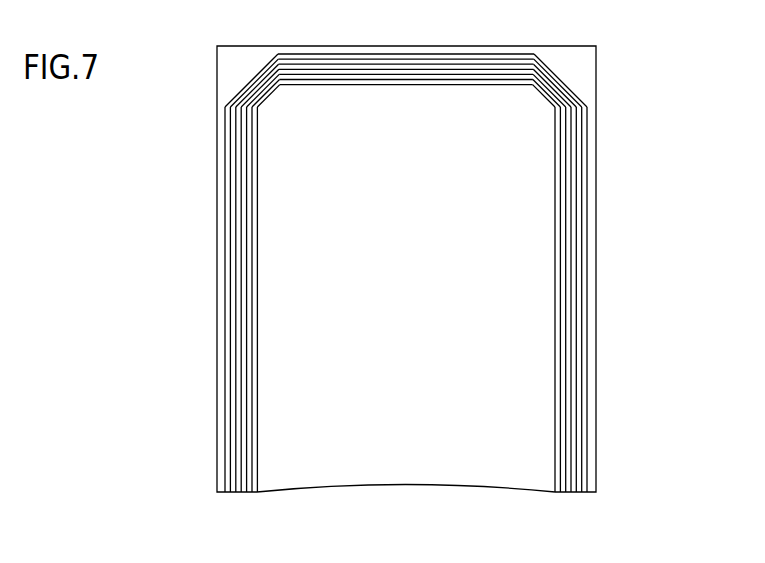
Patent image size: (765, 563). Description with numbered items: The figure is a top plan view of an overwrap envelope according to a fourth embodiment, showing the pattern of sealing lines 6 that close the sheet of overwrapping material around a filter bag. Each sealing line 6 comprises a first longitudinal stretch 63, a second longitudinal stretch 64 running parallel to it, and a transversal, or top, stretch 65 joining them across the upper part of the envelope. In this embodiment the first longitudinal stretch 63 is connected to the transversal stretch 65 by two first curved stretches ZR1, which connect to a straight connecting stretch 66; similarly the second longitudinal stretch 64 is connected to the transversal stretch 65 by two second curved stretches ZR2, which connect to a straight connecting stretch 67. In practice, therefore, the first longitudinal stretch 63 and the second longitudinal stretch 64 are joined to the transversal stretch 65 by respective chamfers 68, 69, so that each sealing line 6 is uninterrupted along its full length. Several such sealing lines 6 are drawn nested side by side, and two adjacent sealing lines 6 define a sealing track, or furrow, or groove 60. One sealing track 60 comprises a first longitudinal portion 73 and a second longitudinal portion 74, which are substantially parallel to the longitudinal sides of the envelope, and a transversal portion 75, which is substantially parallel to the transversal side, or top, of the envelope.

The sealing line 6 is at (241, 420).
The sealing track 60 is at (583, 500).
The first longitudinal stretch 63 is at (230, 366).
The second longitudinal stretch 64 is at (588, 333).
The transversal stretch 65 is at (437, 53).
The straight connecting stretch 66 is at (250, 79).
The straight connecting stretch 67 is at (582, 91).
The chamfer 68 is at (256, 62).
The chamfer 69 is at (577, 69).
The first longitudinal portion 73 is at (226, 284).
The second longitudinal portion 74 is at (579, 288).
The transversal portion 75 is at (392, 65).
The first curved stretch ZR1 is at (224, 105).
The second curved stretch ZR2 is at (537, 47).